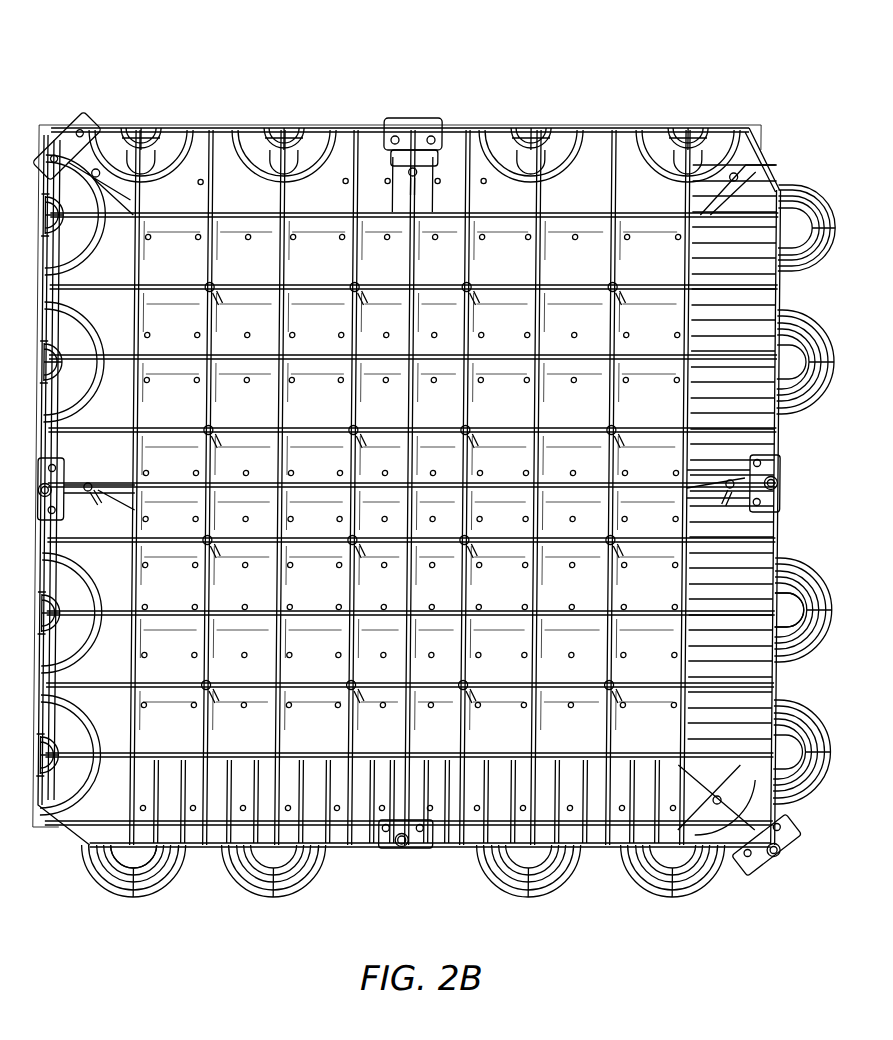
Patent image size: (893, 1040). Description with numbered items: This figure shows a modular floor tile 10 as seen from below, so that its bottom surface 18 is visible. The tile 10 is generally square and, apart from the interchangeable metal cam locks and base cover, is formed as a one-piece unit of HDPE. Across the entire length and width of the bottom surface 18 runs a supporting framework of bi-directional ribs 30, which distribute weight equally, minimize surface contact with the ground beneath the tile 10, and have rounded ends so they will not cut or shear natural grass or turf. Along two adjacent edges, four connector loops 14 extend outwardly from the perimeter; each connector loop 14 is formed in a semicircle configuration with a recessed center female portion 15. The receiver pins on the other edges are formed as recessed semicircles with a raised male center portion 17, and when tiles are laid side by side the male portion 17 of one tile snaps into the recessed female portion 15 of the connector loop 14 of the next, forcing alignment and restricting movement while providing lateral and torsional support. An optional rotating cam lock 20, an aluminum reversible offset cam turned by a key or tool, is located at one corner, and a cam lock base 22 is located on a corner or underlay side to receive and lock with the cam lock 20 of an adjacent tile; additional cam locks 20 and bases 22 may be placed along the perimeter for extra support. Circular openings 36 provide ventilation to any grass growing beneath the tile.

The modular floor tile 10 is at (710, 110).
The connector loop 14 is at (827, 338).
The recessed center female portion 15 is at (790, 598).
The raised male center portion 17 is at (72, 354).
The bottom surface 18 is at (302, 343).
The cam lock 20 is at (424, 848).
The cam lock base 22 is at (54, 143).
The bi-directional ribs 30 is at (107, 690).
The circular openings 36 is at (622, 472).